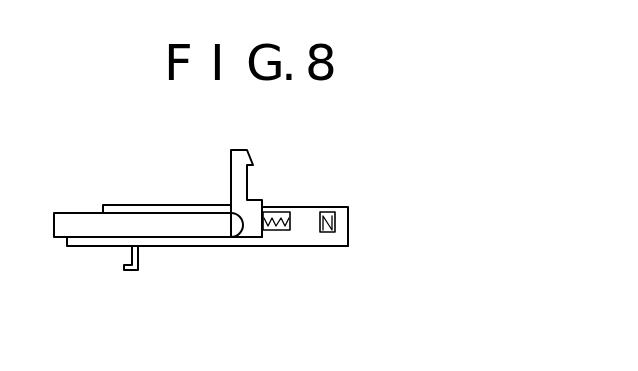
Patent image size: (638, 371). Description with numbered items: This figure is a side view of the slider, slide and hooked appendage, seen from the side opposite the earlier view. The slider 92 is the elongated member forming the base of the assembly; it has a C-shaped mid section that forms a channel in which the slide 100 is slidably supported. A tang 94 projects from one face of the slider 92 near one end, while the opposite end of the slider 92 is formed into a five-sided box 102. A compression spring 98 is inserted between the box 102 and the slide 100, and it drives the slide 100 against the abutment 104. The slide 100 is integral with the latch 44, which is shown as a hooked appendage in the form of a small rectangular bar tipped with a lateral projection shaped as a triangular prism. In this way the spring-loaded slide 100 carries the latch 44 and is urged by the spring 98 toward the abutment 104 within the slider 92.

The latch 44 is at (235, 160).
The slider 92 is at (195, 205).
The tang 94 is at (142, 271).
The compression spring 98 is at (328, 172).
The slide 100 is at (84, 214).
The five-sided box 102 is at (333, 207).
The abutment 104 is at (238, 228).